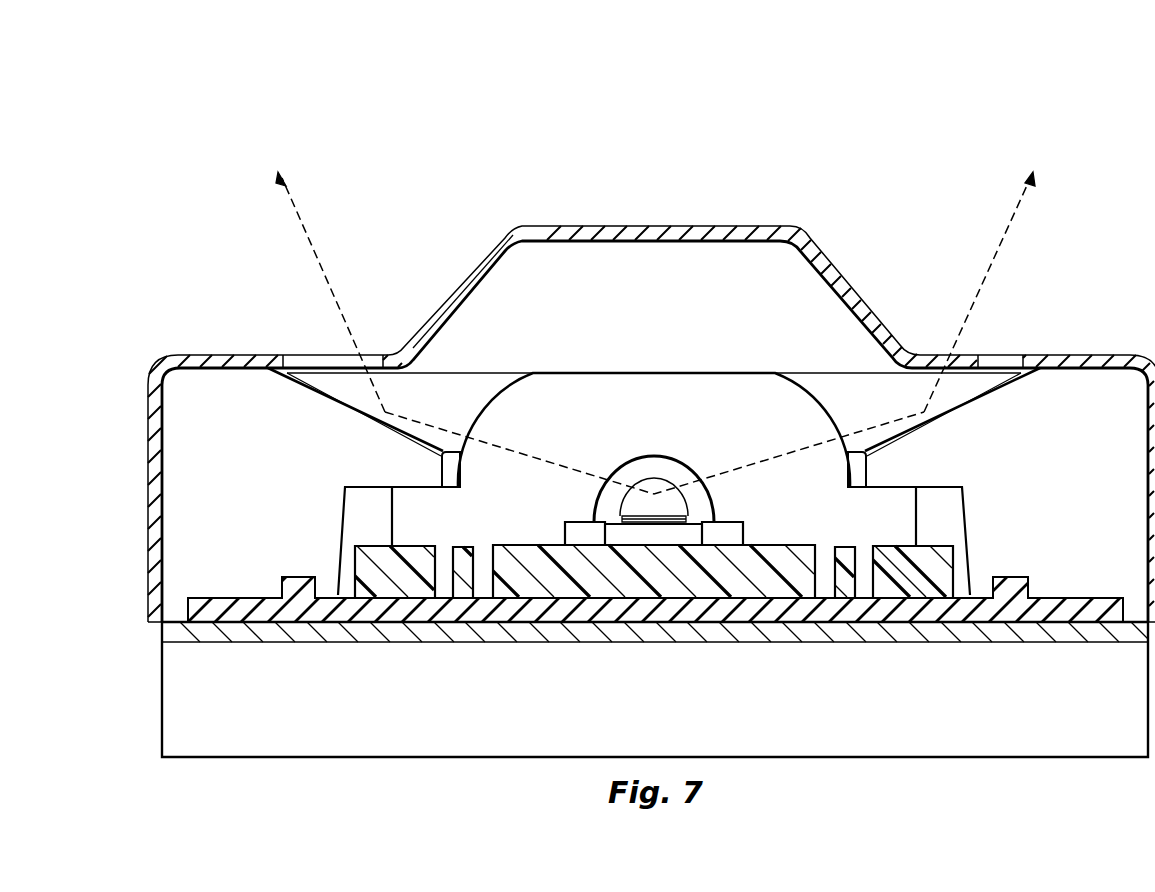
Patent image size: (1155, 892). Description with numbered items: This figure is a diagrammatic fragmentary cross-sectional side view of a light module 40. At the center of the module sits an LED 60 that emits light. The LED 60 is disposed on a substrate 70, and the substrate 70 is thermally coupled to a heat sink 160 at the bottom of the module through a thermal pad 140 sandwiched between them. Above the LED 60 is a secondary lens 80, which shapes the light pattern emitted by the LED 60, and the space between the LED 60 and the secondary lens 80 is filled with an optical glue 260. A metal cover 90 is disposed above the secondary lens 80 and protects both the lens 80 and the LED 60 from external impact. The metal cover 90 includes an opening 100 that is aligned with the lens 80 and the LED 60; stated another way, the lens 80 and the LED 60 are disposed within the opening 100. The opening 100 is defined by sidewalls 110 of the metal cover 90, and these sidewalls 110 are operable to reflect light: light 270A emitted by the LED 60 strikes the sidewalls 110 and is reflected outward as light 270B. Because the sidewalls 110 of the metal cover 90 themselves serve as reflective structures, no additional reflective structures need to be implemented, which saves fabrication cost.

The light module 40 is at (432, 112).
The metal cover 90 is at (290, 353).
The opening 100 is at (638, 327).
The secondary lens 80 is at (517, 394).
The sidewalls 110 is at (863, 447).
The substrate 70 is at (775, 545).
The LED 60 is at (612, 497).
The optical glue 260 is at (675, 433).
The light emitted by the LED 270A is at (765, 463).
The reflected light 270B is at (990, 265).
The thermal pad 140 is at (878, 617).
The heat sink 160 is at (673, 711).